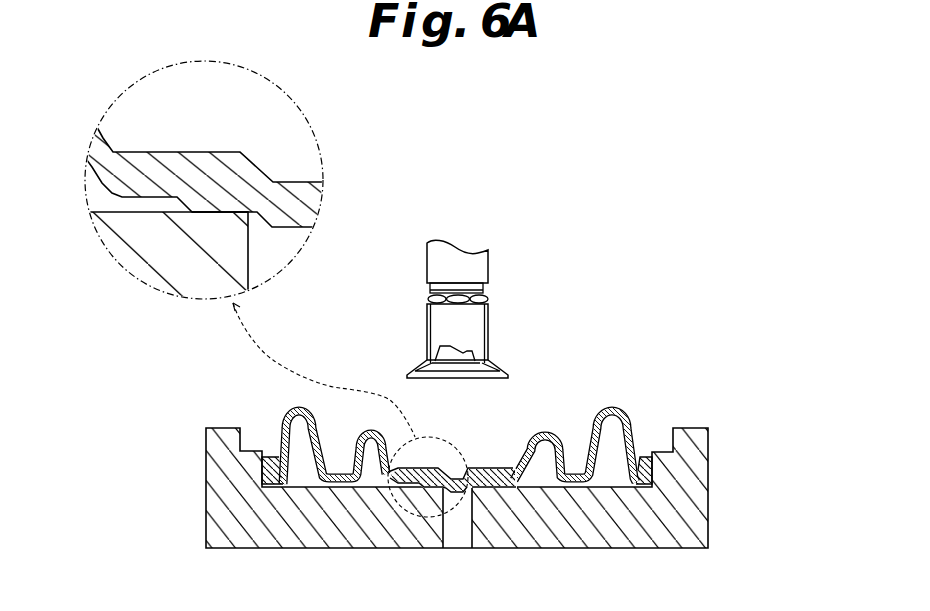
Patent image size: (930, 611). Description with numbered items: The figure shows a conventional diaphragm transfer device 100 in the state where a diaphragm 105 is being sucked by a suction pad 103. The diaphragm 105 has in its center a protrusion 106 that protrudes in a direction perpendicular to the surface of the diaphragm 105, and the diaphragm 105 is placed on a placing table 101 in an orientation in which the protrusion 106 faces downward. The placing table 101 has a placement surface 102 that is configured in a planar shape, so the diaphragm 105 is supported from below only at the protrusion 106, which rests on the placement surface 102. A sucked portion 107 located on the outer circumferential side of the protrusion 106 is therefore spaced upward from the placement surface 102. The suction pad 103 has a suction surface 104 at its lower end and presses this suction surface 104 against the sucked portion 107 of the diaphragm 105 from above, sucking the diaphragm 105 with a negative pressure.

The diaphragm transfer device 100 is at (643, 277).
The placing table 101 is at (709, 467).
The placement surface 102 is at (122, 222).
The suction pad 103 is at (497, 367).
The suction surface 104 is at (500, 378).
The diaphragm 105 is at (280, 417).
The protrusion 106 is at (223, 210).
The sucked portion 107 is at (148, 152).